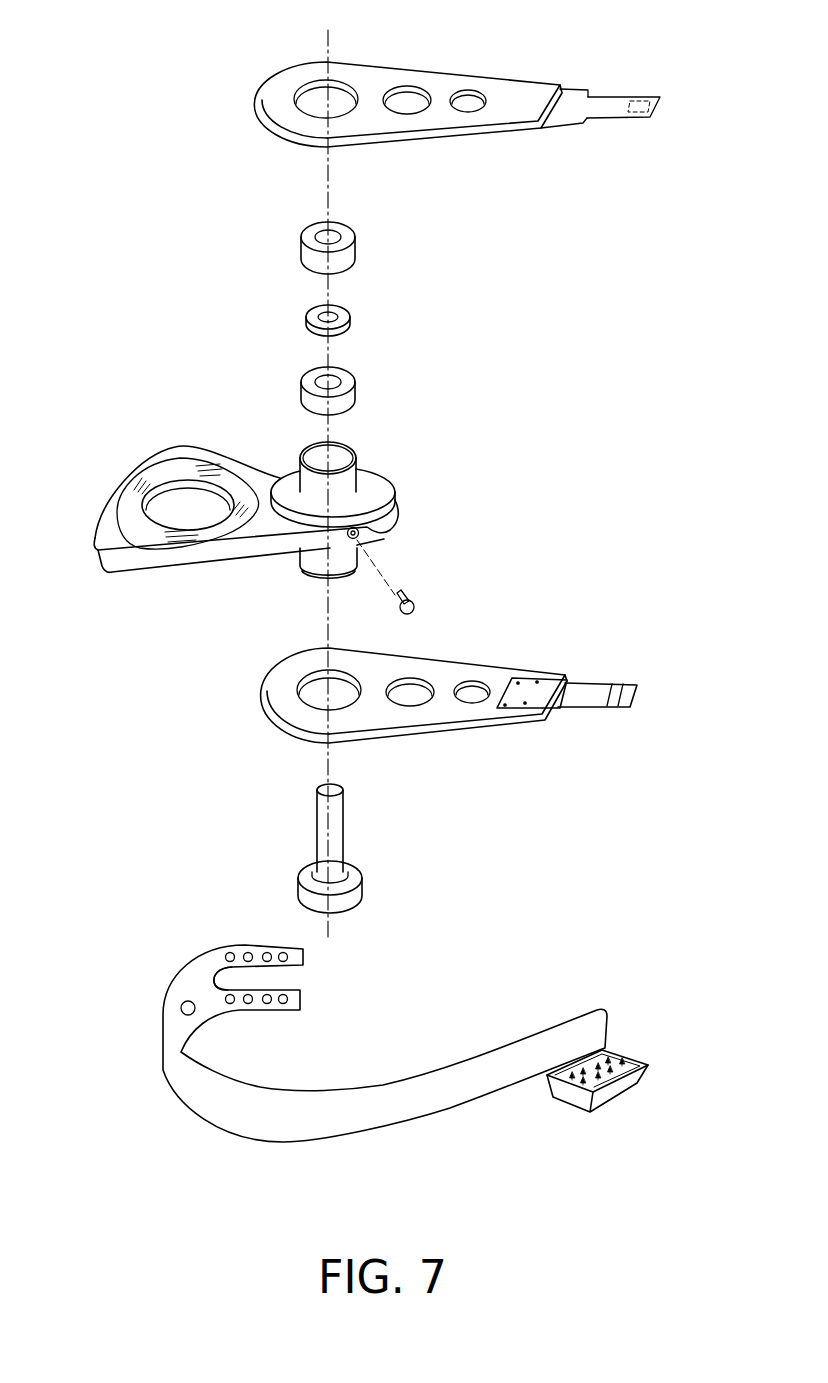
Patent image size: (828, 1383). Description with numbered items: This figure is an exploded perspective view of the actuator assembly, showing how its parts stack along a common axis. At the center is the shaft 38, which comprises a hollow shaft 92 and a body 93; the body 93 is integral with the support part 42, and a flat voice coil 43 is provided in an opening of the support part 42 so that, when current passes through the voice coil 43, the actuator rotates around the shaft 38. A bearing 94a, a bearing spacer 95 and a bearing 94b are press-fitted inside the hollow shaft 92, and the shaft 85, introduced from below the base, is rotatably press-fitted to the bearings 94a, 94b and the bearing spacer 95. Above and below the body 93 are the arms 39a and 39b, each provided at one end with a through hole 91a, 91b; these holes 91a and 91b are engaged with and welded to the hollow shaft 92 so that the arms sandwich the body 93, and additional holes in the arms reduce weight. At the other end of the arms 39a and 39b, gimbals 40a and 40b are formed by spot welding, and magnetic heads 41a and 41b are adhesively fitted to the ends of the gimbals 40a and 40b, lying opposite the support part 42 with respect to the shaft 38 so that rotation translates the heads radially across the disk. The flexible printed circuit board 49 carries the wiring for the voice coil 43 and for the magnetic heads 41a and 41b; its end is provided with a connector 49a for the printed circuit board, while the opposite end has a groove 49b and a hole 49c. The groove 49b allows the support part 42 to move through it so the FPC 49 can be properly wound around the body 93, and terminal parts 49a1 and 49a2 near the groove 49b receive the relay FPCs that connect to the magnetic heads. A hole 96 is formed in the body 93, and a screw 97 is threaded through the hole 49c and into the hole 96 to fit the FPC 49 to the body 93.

The shaft 38 is at (385, 512).
The arm 39a is at (467, 74).
The arm 39b is at (438, 675).
The gimbal 40a is at (603, 90).
The gimbal 40b is at (552, 681).
The magnetic head 41a is at (642, 100).
The magnetic head 41b is at (620, 685).
The support part 42 is at (246, 535).
The voice coil 43 is at (142, 540).
The flexible printed circuit board 49 is at (419, 1056).
The connector 49a is at (617, 1088).
The terminal part 49a1 is at (302, 962).
The terminal part 49a2 is at (299, 992).
The groove 49b is at (258, 976).
The hole 49c is at (198, 1013).
The shaft 85 is at (317, 828).
The through hole 91a is at (309, 98).
The through hole 91b is at (310, 693).
The hollow shaft 92 is at (347, 445).
The body 93 is at (390, 485).
The bearing 94a is at (343, 230).
The bearing 94b is at (345, 375).
The bearing spacer 95 is at (345, 311).
The hole 96 is at (360, 532).
The screw 97 is at (411, 594).